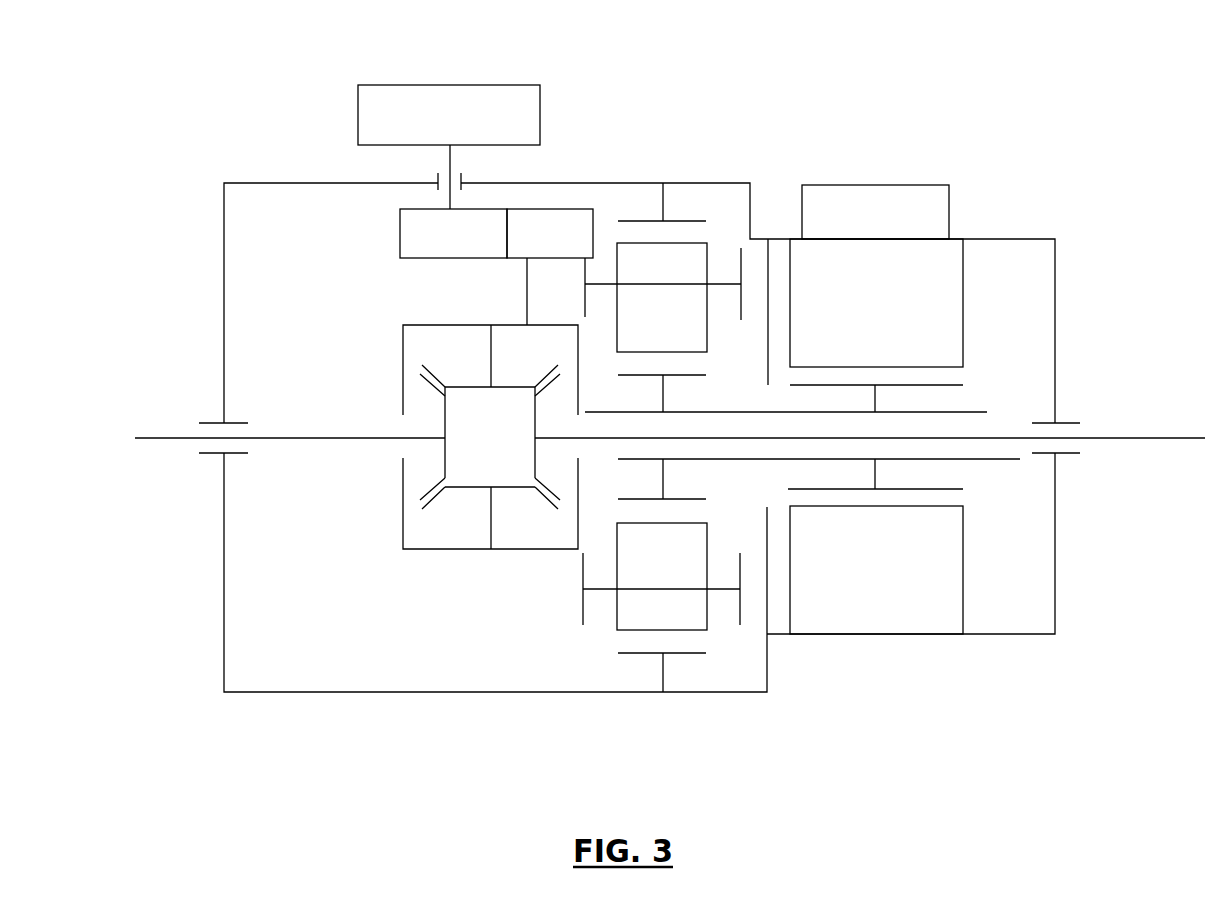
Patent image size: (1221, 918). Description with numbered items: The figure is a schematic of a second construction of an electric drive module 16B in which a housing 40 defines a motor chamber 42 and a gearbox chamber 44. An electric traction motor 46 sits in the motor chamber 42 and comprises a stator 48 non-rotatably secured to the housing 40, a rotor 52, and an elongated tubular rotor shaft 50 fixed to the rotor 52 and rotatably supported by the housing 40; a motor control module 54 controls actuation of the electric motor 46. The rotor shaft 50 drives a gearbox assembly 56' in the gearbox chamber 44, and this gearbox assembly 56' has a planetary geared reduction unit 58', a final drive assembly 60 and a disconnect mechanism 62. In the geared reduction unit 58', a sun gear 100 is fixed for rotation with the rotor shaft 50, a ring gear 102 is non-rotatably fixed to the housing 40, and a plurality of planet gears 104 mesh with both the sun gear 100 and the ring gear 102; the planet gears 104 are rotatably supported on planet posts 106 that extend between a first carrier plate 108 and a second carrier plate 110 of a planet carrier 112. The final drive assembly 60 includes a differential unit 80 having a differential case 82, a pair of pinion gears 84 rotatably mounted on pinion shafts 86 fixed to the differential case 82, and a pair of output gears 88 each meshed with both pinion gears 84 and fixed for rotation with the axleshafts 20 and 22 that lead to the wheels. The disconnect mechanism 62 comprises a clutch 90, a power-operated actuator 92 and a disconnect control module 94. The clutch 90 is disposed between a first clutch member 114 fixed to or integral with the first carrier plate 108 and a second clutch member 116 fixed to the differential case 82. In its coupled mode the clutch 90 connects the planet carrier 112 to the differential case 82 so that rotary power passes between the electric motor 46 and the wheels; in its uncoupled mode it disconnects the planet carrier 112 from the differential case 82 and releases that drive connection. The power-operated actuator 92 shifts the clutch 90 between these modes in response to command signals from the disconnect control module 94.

The electric drive module 16B is at (838, 110).
The axleshaft 20 is at (147, 435).
The axleshaft 22 is at (1142, 435).
The housing 40 is at (845, 273).
The motor chamber 42 is at (996, 359).
The gearbox chamber 44 is at (296, 352).
The electric traction motor 46 is at (980, 288).
The stator 48 is at (868, 625).
The rotor shaft 50 is at (987, 412).
The rotor 52 is at (928, 490).
The motor control module 54 is at (943, 197).
The gearbox assembly 56' is at (447, 480).
The geared reduction unit 58' is at (768, 187).
The final drive assembly 60 is at (555, 560).
The disconnect mechanism 62 is at (554, 173).
The differential unit 80 is at (386, 462).
The differential case 82 is at (403, 382).
The pinion gears 84 is at (470, 385).
The pinion shafts 86 is at (491, 358).
The output gears 88 is at (533, 418).
The clutch 90 is at (582, 218).
The power-operated actuator 92 is at (410, 223).
The disconnect control module 94 is at (527, 93).
The sun gear 100 is at (676, 375).
The ring gear 102 is at (682, 266).
The planet gears 104 is at (645, 333).
The planet posts 106 is at (630, 283).
The first carrier plate 108 is at (583, 602).
The second carrier plate 110 is at (740, 573).
The planet carrier 112 is at (654, 597).
The first clutch member 114 is at (587, 297).
The second clutch member 116 is at (527, 285).